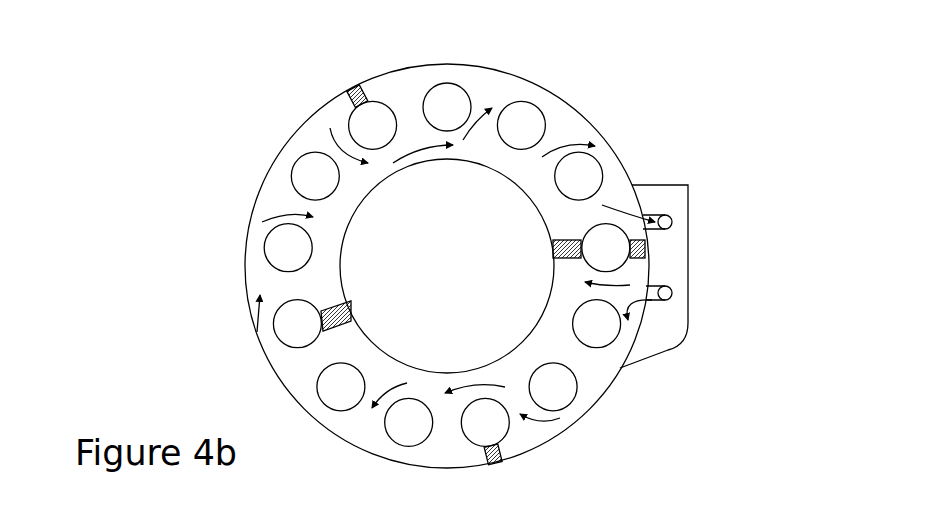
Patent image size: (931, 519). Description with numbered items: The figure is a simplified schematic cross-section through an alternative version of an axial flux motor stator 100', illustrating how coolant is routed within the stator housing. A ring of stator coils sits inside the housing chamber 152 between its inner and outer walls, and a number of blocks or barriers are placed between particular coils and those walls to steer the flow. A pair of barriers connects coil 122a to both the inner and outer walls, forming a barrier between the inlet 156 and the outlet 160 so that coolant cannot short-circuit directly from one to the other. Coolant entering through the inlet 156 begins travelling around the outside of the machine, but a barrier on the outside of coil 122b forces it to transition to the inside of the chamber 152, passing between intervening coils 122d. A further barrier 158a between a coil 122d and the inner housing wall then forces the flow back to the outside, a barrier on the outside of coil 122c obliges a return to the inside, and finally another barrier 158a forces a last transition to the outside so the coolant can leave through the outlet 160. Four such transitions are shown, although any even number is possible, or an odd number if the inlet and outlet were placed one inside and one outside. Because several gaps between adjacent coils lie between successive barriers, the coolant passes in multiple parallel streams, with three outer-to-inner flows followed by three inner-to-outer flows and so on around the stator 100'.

The axial flux motor stator 100' is at (377, 264).
The chamber 152 is at (280, 180).
The coil 122a is at (647, 248).
The coil 122b is at (483, 422).
The coil 122c is at (360, 122).
The coil 122d is at (556, 392).
The inlet 156 is at (672, 293).
The block/barrier 158a is at (553, 250).
The outlet 160 is at (670, 215).